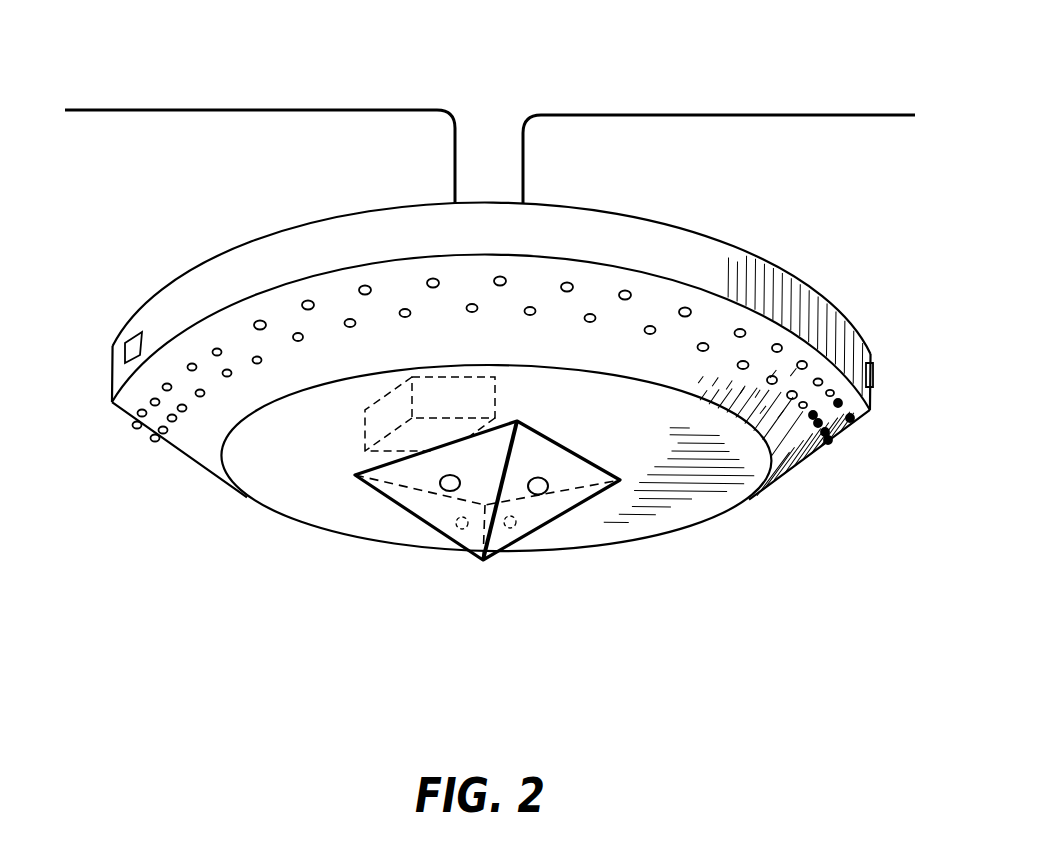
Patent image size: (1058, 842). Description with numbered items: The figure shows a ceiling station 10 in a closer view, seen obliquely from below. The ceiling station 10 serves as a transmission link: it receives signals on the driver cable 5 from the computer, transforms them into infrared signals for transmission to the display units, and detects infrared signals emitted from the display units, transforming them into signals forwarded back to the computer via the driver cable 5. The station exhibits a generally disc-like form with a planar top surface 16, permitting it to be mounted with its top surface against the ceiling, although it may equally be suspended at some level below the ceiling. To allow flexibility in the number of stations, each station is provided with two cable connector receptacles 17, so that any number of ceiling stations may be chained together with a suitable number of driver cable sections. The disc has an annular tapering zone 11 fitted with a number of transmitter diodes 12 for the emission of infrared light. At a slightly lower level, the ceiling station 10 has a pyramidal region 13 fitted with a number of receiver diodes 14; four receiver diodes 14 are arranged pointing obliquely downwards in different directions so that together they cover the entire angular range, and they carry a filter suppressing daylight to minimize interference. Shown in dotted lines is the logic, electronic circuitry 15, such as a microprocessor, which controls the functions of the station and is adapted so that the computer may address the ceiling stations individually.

The driver cable 5 is at (272, 110).
The ceiling station 10 is at (506, 407).
The annular tapering zone 11 is at (187, 442).
The transmitter diodes 12 is at (350, 328).
The pyramidal region 13 is at (438, 515).
The receiver diodes 14 is at (460, 484).
The electronic circuitry 15 is at (366, 414).
The planar top surface 16 is at (627, 191).
The cable connector receptacles 17 is at (126, 344).